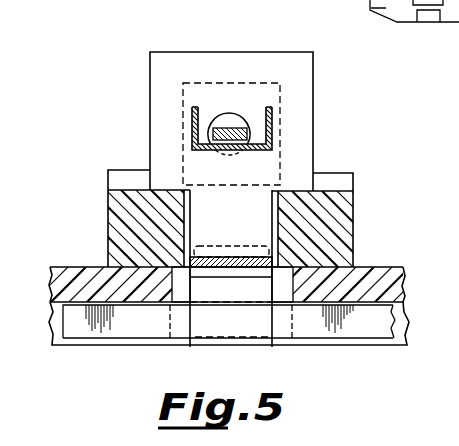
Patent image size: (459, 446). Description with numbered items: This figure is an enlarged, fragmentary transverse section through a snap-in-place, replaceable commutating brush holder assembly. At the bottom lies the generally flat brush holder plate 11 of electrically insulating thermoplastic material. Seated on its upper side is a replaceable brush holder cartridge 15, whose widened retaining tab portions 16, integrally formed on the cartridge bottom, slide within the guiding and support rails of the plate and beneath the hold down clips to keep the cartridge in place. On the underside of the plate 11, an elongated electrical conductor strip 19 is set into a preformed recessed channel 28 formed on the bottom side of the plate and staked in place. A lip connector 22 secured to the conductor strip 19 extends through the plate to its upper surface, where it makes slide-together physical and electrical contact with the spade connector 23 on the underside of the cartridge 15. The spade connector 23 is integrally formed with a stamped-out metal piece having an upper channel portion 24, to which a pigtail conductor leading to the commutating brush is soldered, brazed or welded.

The brush holder plate 11 is at (378, 264).
The brush holder cartridge 15 is at (231, 50).
The retaining tab portion 16 is at (121, 210).
The electrical conductor strip 19 is at (310, 330).
The lip connector 22 is at (250, 248).
The spade connector 23 is at (207, 270).
The upper channel portion 24 is at (263, 162).
The recessed channel 28 is at (370, 343).